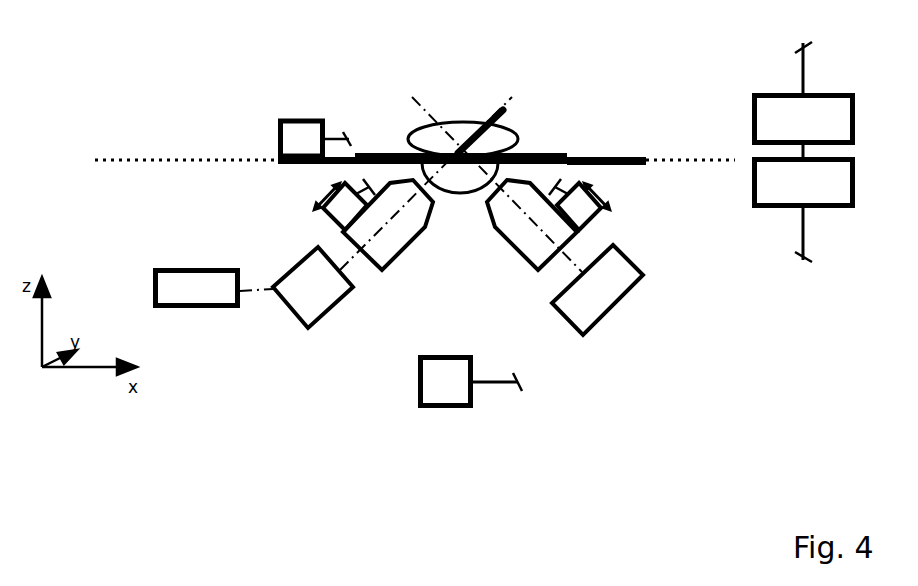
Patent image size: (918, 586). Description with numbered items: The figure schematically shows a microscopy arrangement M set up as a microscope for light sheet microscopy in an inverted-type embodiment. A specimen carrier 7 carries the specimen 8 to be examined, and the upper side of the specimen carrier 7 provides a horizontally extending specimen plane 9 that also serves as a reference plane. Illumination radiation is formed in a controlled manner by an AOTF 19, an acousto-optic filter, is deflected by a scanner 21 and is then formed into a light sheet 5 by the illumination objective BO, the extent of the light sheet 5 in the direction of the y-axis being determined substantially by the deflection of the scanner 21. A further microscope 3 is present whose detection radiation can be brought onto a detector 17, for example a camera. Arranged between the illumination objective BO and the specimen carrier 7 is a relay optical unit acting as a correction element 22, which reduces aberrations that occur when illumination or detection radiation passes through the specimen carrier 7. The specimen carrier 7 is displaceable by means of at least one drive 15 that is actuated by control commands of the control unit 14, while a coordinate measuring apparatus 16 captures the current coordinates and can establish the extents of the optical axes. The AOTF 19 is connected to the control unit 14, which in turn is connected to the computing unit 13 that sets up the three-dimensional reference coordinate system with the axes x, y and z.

The further microscope 3 is at (502, 235).
The light sheet 5 is at (487, 120).
The specimen carrier 7 is at (528, 150).
The specimen 8 is at (415, 128).
The specimen plane 9 is at (128, 158).
The computing unit 13 is at (791, 194).
The control unit 14 is at (791, 131).
The drive 15 is at (308, 120).
The coordinate measuring apparatus 16 is at (458, 393).
The detector 17 is at (610, 283).
The AOTF 19 is at (197, 308).
The scanner 21 is at (310, 298).
The correction element 22 is at (458, 195).
The illumination objective BO is at (422, 232).
The microscopy arrangement M is at (230, 93).